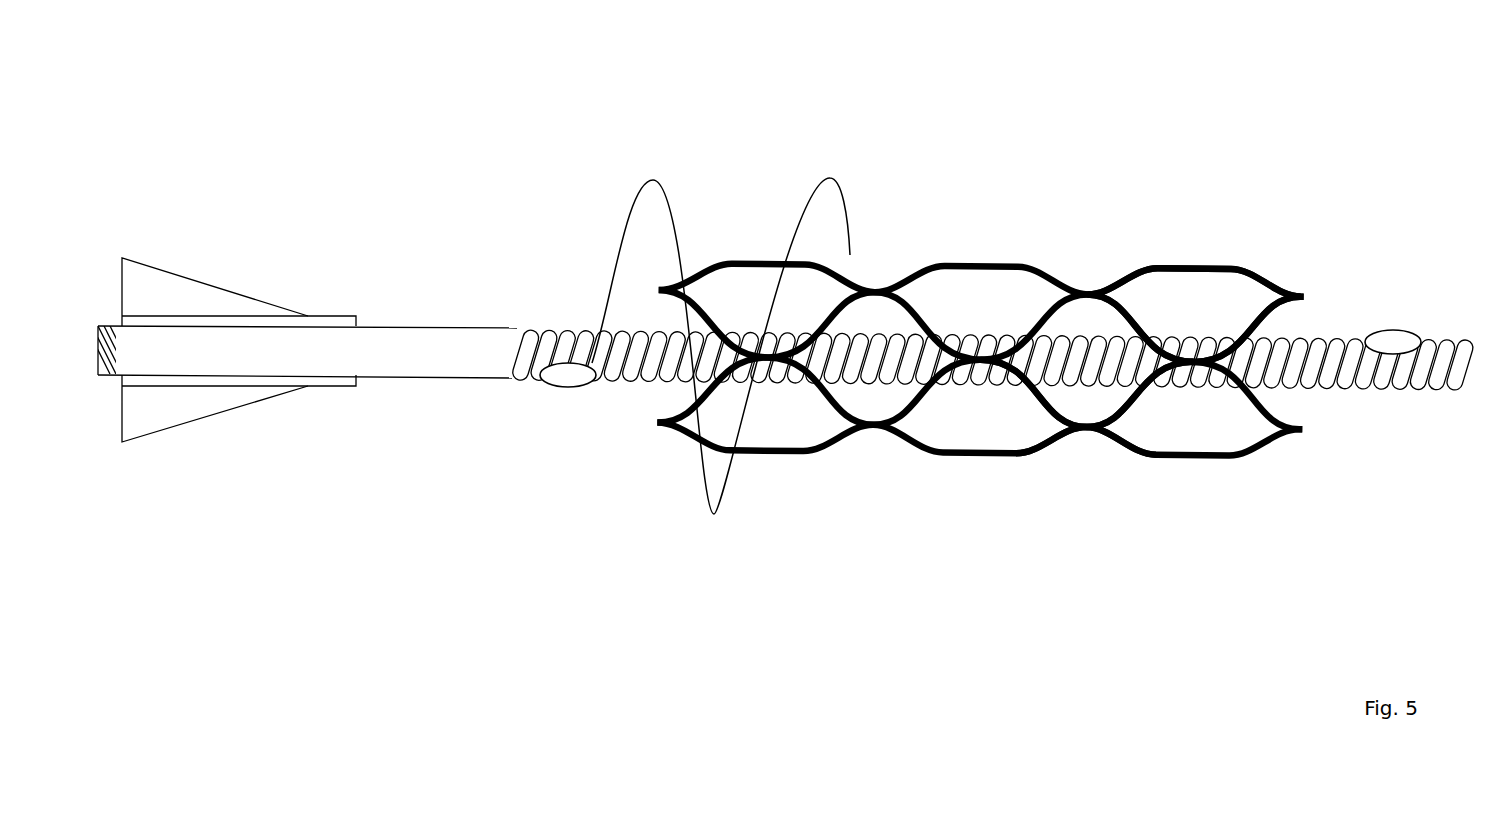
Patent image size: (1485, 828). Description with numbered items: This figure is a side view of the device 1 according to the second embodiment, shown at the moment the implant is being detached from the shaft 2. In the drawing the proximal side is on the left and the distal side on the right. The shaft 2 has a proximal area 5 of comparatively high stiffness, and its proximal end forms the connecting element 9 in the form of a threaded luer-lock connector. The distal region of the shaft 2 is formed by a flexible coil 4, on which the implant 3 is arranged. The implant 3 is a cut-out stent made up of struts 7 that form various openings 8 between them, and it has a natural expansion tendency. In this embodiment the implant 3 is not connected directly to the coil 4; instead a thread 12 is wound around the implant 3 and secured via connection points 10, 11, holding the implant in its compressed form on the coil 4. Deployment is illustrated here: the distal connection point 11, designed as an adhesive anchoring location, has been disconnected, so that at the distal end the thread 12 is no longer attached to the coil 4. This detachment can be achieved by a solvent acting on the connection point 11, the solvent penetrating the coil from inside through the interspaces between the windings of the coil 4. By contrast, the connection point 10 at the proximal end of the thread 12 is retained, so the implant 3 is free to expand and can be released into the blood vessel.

The implant device 1 is at (960, 303).
The shaft 2 is at (960, 350).
The implant 3 is at (980, 357).
The coil 4 is at (895, 373).
The proximal area 5 is at (410, 316).
The struts 7 is at (1102, 443).
The openings 8 is at (1191, 293).
The connecting element 9 is at (271, 415).
The connection point 10 is at (579, 408).
The connection point 11 is at (1381, 312).
The thread 12 is at (656, 166).